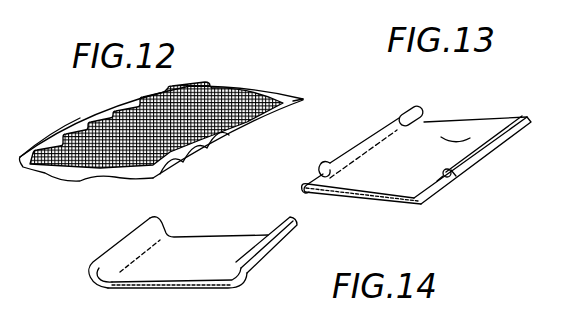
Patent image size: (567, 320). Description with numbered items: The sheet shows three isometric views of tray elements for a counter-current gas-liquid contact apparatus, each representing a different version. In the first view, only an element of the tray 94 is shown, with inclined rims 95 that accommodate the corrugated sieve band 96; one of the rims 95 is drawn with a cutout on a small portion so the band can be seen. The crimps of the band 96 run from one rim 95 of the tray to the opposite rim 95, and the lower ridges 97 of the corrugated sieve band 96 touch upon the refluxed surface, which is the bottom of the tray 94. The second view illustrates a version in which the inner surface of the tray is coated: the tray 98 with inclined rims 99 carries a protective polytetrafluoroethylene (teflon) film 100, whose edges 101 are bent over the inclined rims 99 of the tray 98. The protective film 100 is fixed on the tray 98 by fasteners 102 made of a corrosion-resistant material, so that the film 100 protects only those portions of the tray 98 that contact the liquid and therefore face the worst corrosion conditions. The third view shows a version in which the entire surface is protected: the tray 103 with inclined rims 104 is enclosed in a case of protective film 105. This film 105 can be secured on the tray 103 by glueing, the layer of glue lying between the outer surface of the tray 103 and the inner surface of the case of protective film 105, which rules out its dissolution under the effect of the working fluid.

In FIG. 12, the tray 94 is at (100, 180).
In FIG. 12, the inclined rims 95 is at (50, 136).
In FIG. 12, the corrugated sieve band 96 is at (240, 96).
In FIG. 12, the lower ridges 97 is at (222, 135).
In FIG. 13, the tray 98 is at (364, 200).
In FIG. 13, the inclined rims 99 is at (519, 120).
In FIG. 13, the protective film 100 is at (443, 133).
In FIG. 13, the edges of the protective film 101 is at (305, 183).
In FIG. 13, the fasteners 102 is at (327, 162).
In FIG. 14, the tray 103 is at (230, 287).
In FIG. 14, the inclined rims 104 is at (90, 273).
In FIG. 14, the case of protective film 105 is at (203, 248).